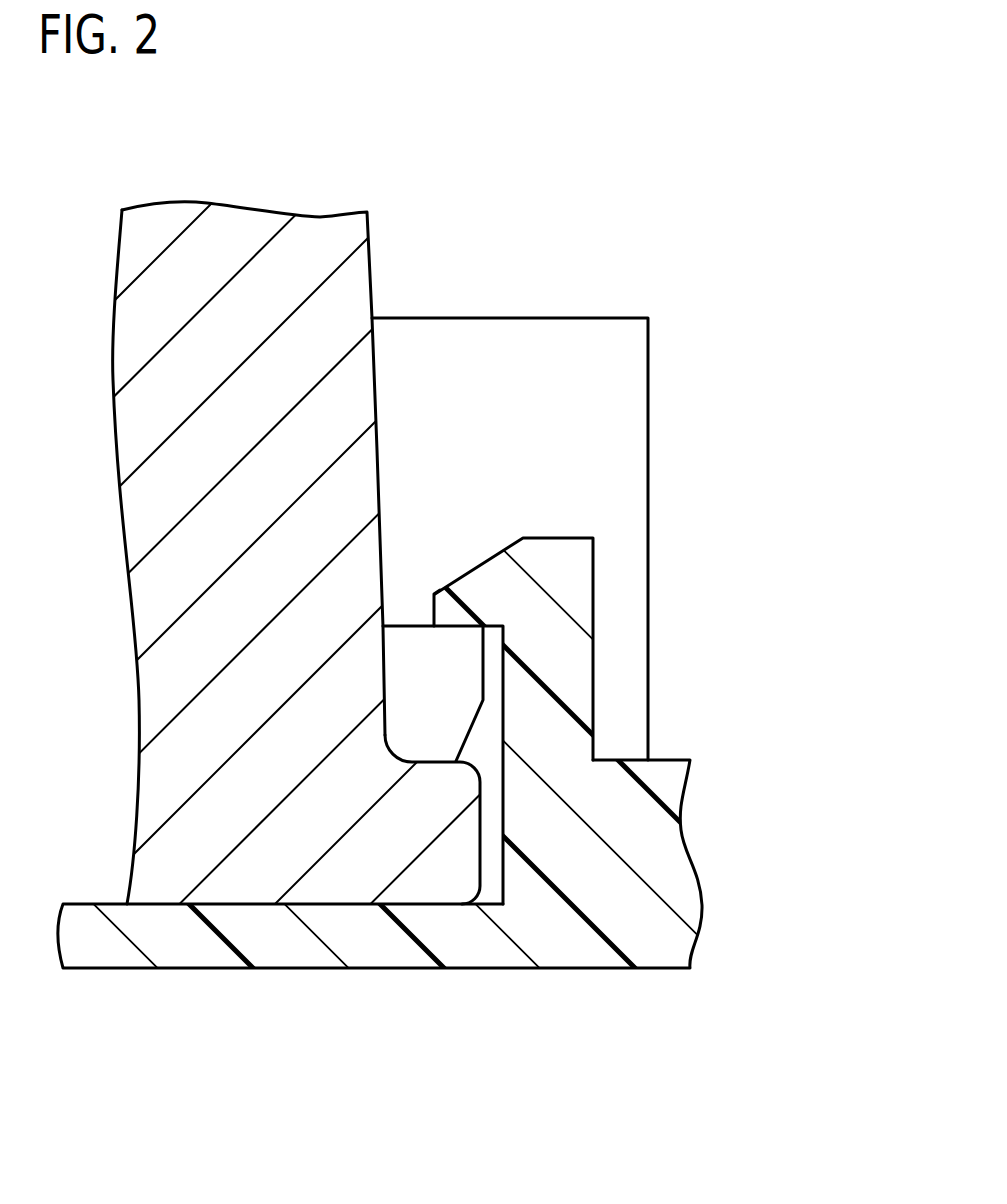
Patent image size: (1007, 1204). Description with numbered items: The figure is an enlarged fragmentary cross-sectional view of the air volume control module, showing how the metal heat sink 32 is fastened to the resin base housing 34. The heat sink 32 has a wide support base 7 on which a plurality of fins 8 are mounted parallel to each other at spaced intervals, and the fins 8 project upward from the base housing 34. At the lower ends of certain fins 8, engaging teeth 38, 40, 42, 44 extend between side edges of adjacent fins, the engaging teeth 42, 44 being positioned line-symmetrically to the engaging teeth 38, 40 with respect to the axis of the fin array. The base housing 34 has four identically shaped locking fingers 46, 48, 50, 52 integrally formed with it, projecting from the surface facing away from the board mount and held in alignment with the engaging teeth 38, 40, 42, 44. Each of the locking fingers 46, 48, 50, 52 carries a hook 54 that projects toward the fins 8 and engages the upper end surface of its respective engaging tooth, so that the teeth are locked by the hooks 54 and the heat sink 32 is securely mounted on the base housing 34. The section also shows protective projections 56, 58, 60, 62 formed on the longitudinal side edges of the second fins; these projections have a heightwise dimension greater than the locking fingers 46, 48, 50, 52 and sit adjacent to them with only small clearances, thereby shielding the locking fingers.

The support base 7 is at (463, 842).
The fins 8 is at (143, 343).
The heat sink 32 is at (605, 599).
The base housing 34 is at (676, 940).
The engaging tooth 38 is at (478, 834).
The engaging tooth 40 is at (478, 834).
The engaging tooth 42 is at (478, 834).
The engaging tooth 44 is at (417, 710).
The locking finger 46 is at (646, 649).
The locking finger 48 is at (646, 649).
The locking finger 50 is at (646, 649).
The locking finger 52 is at (567, 633).
The hook 54 is at (453, 593).
The protective projection 56 is at (518, 508).
The protective projection 58 is at (518, 508).
The protective projection 60 is at (518, 508).
The protective projection 62 is at (500, 327).